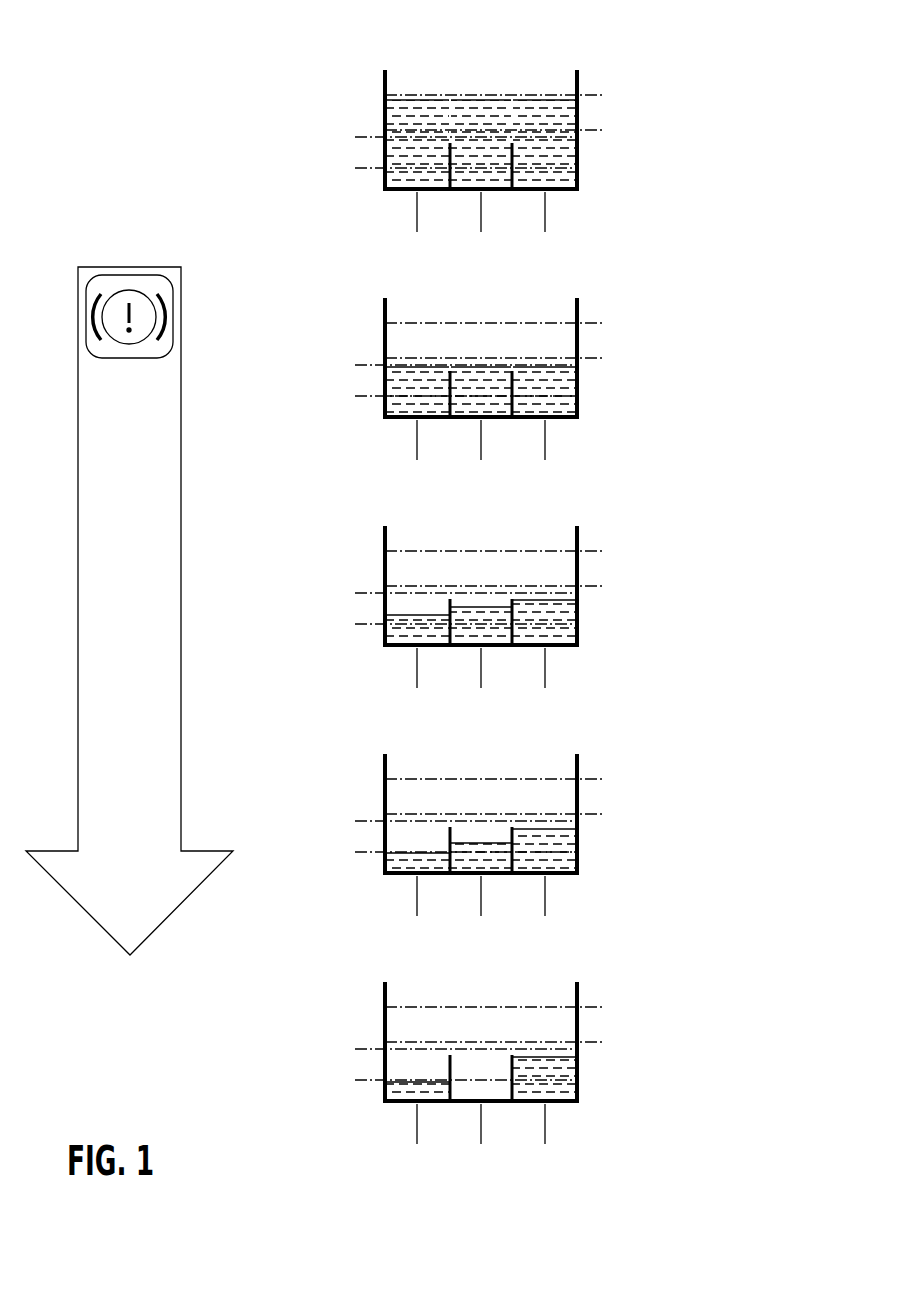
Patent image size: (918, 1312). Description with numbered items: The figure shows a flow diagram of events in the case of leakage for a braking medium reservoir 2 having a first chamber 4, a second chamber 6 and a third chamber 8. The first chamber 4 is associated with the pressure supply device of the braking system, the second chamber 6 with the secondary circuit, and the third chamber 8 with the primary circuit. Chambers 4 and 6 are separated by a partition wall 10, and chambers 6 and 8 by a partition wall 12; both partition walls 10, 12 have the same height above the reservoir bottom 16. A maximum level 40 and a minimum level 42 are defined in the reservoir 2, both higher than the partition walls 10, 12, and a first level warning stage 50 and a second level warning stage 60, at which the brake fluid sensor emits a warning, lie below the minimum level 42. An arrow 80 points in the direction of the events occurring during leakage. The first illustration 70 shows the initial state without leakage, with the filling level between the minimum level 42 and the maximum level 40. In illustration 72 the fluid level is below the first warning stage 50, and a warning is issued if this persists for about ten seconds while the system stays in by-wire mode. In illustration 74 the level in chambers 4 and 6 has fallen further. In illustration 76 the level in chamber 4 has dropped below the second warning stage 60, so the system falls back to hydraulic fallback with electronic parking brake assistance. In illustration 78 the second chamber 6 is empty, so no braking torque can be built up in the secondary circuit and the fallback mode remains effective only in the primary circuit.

The braking medium reservoir 2 is at (498, 155).
The first chamber 4 is at (400, 184).
The second chamber 6 is at (482, 163).
The third chamber 8 is at (560, 158).
The partition wall 10 is at (447, 165).
The partition wall 12 is at (515, 165).
The reservoir bottom 16 is at (562, 192).
The maximum level 40 is at (600, 95).
The minimum level 42 is at (600, 132).
The first level warning stage 50 is at (358, 136).
The second level warning stage 60 is at (362, 168).
The first illustration 70 is at (540, 137).
The illustration 72 is at (400, 412).
The illustration 74 is at (400, 640).
The illustration 76 is at (400, 868).
The illustration 78 is at (400, 1096).
The arrow 80 is at (162, 740).